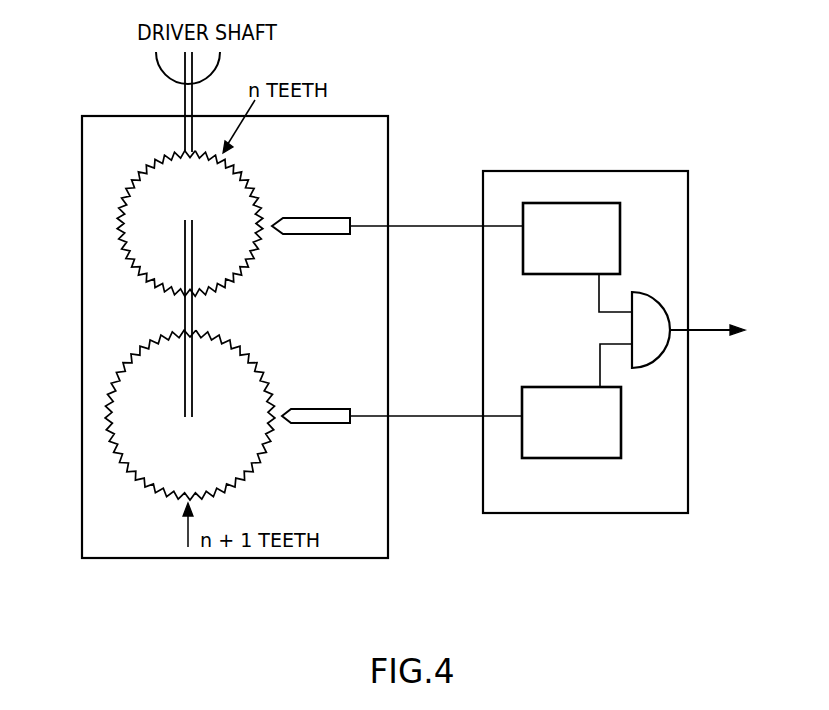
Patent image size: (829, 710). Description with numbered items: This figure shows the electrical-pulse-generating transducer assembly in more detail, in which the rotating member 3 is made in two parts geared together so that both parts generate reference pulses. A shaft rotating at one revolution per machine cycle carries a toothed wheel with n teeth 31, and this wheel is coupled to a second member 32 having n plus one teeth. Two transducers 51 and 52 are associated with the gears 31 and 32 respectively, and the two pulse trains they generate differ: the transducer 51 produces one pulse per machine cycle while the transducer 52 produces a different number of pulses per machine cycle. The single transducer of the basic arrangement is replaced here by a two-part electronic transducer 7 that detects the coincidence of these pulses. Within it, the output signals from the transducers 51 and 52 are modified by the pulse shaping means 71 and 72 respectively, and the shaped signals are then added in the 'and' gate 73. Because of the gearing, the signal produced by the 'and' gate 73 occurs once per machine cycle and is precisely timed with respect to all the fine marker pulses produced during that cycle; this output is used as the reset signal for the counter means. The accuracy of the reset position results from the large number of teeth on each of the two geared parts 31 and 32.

The rotating member 3 is at (88, 157).
The toothed wheel with n teeth 31 is at (190, 224).
The second member having n + 1 teeth 32 is at (190, 415).
The transducer 51 is at (321, 228).
The transducer 52 is at (327, 419).
The two-part electronic transducer 7 is at (581, 172).
The pulse shaping means 71 is at (561, 272).
The pulse shaping means 72 is at (570, 459).
The 'and' gate 73 is at (646, 360).